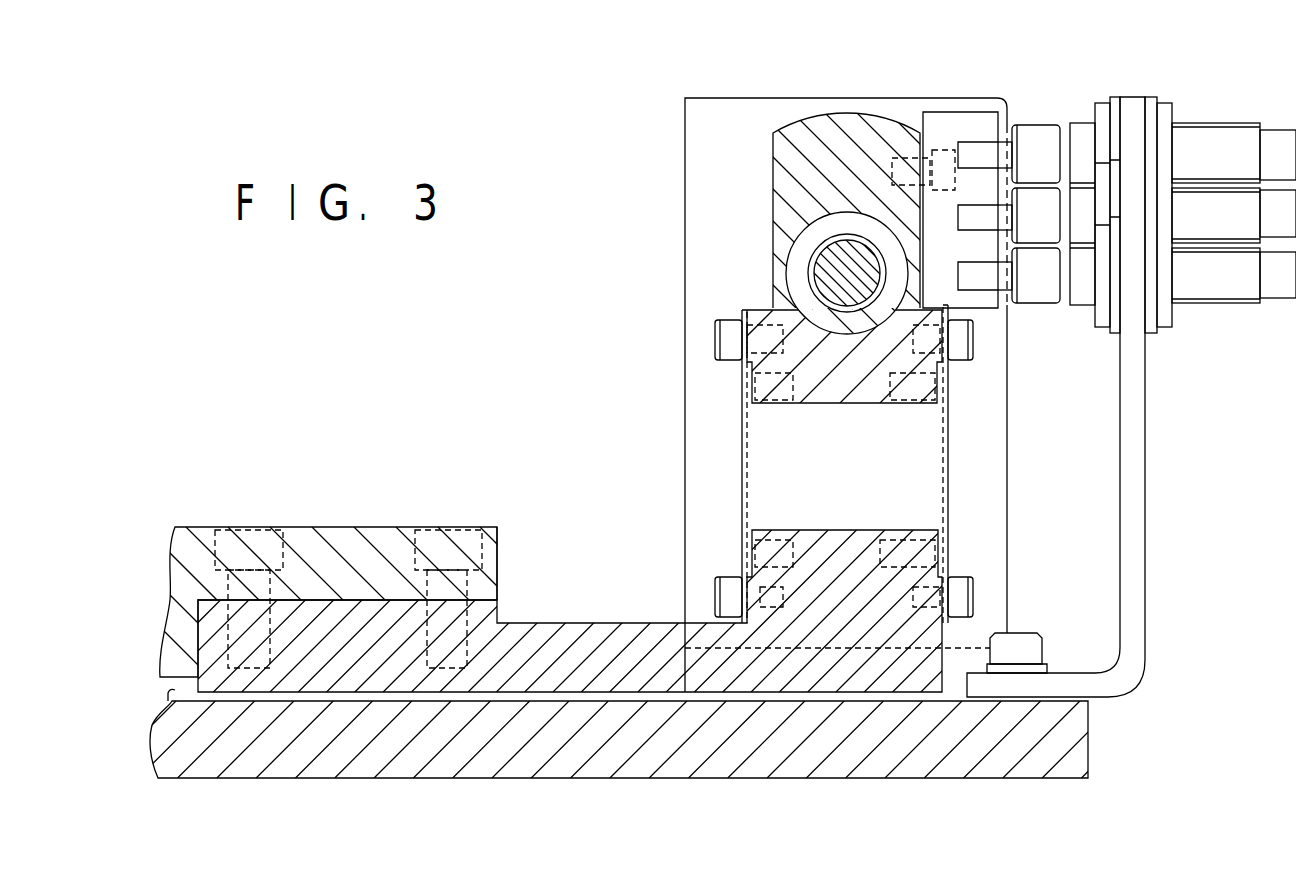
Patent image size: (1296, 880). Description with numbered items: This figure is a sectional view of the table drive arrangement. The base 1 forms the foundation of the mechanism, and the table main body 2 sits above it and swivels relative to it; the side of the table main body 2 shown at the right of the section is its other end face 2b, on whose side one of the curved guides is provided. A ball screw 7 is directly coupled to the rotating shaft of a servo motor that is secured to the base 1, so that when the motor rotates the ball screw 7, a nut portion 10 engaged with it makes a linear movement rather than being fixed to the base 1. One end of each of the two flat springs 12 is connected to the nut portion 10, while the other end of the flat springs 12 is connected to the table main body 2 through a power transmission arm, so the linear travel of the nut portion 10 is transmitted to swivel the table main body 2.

The base 1 is at (593, 766).
The table main body 2 is at (320, 527).
The other end face 2b is at (498, 538).
The ball screw 7 is at (818, 262).
The nut portion 10 is at (822, 130).
The flat springs 12 is at (742, 448).